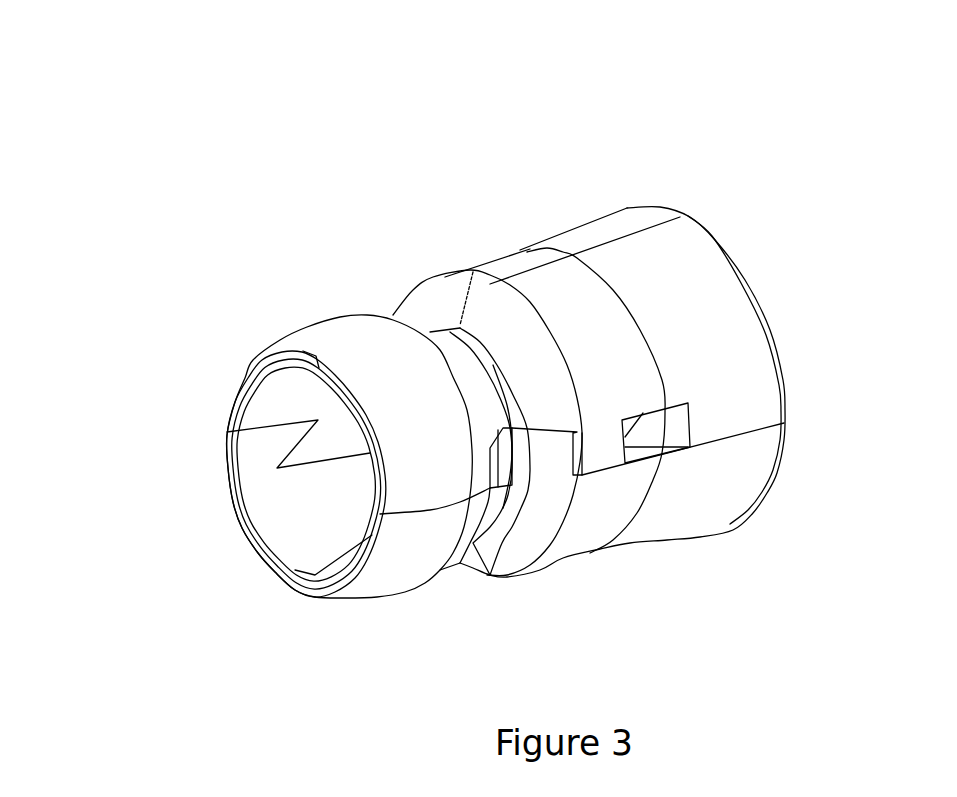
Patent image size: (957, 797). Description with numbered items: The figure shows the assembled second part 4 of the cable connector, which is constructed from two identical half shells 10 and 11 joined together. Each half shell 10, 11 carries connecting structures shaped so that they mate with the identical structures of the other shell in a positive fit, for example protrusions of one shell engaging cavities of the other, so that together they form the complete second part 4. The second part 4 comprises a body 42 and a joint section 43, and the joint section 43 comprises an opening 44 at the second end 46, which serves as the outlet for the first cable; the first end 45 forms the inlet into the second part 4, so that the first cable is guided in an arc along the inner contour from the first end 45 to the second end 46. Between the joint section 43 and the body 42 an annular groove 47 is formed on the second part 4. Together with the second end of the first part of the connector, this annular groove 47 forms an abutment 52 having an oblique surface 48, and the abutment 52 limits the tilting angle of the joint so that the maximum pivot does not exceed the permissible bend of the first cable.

The second part 4 is at (694, 166).
The half shell 10 is at (725, 334).
The half shell 11 is at (762, 470).
The body 42 is at (640, 253).
The joint section 43 is at (325, 340).
The opening 44 is at (272, 502).
The first end 45 is at (725, 247).
The second end 46 is at (293, 580).
The annular groove 47 is at (507, 502).
The oblique surface 48 is at (440, 295).
The abutment 52 is at (462, 572).